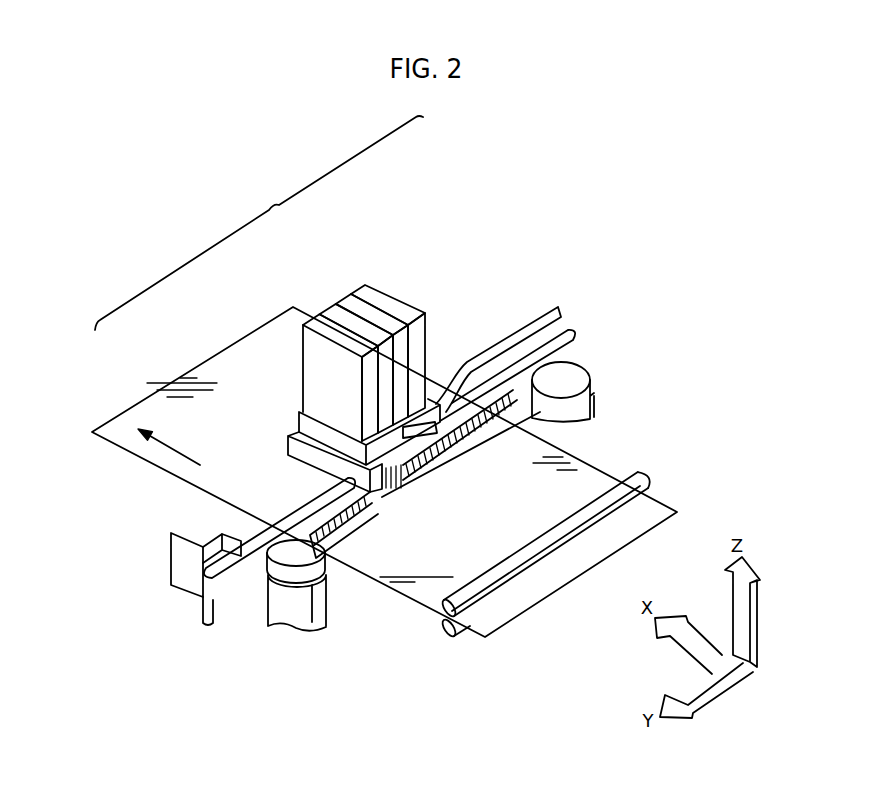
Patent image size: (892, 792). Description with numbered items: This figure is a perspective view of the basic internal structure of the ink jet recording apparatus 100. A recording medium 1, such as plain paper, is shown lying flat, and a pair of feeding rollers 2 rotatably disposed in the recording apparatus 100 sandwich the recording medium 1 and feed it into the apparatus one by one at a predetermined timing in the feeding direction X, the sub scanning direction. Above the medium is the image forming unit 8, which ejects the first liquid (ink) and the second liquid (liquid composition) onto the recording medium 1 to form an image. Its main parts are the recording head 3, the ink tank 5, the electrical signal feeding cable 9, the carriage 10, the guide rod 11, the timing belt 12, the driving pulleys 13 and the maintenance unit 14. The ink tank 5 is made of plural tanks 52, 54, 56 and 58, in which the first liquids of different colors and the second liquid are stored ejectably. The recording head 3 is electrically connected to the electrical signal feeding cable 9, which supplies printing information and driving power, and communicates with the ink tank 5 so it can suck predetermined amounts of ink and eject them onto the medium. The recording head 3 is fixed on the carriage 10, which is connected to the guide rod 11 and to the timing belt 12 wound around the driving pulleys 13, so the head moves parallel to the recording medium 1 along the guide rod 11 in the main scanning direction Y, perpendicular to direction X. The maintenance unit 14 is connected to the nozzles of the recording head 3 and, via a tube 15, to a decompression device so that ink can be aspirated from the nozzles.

The recording medium 1 is at (128, 423).
The feeding rollers 2 is at (642, 480).
The recording head 3 is at (290, 440).
The ink tank 5 is at (344, 333).
The image forming unit 8 is at (259, 223).
The electrical signal feeding cable 9 is at (478, 355).
The carriage 10 is at (262, 462).
The guide rod 11 is at (530, 362).
The timing belt 12 is at (512, 388).
The driving pulleys 13 is at (560, 362).
The maintenance unit 14 is at (196, 537).
The tube 15 is at (222, 612).
The tank 52 is at (318, 318).
The tank 54 is at (333, 313).
The tank 56 is at (352, 302).
The tank 58 is at (388, 324).
The recording apparatus 100 is at (711, 324).